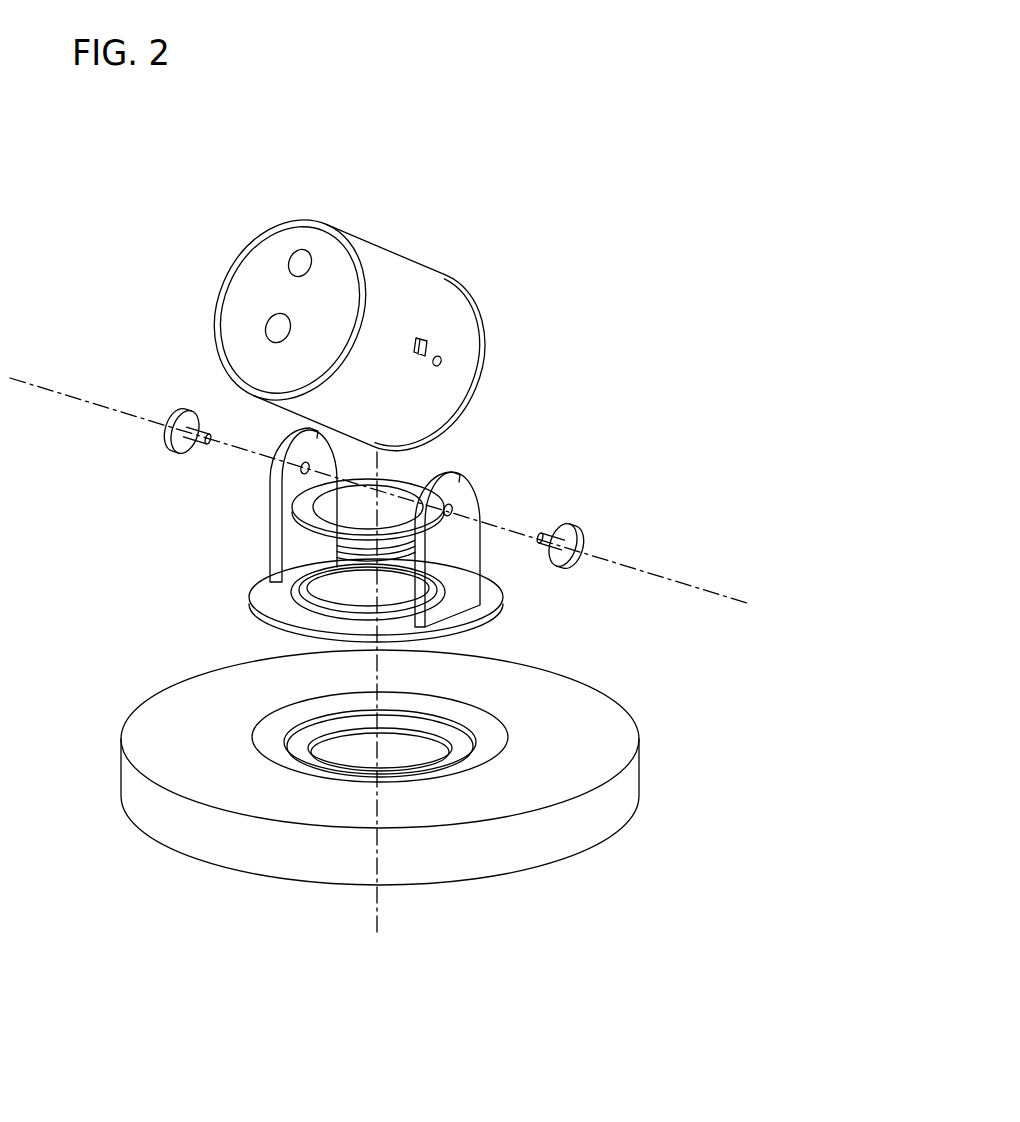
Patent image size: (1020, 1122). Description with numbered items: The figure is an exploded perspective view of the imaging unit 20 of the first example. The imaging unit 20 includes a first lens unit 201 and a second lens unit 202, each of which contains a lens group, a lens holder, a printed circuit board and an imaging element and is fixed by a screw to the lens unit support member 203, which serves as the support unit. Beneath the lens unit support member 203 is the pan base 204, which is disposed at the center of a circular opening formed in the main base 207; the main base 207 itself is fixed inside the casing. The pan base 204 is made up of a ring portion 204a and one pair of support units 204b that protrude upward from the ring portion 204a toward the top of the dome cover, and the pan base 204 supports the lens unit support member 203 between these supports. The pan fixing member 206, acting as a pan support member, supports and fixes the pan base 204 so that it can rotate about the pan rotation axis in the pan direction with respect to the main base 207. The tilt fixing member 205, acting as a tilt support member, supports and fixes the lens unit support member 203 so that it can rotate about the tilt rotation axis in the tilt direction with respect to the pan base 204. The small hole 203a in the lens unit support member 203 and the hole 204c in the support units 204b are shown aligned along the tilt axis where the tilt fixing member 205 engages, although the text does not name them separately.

The imaging unit 20 is at (797, 147).
The first lens unit 201 is at (265, 326).
The second lens unit 202 is at (290, 262).
The lens unit support member 203 is at (420, 278).
The pivot hole 203a is at (445, 360).
The pan base 204 is at (391, 552).
The ring portion 204a is at (257, 593).
The support units 204b is at (385, 519).
The arm hole 204c is at (460, 507).
The tilt fixing member 205 is at (165, 424).
The pan fixing member 206 is at (392, 480).
The main base 207 is at (606, 818).